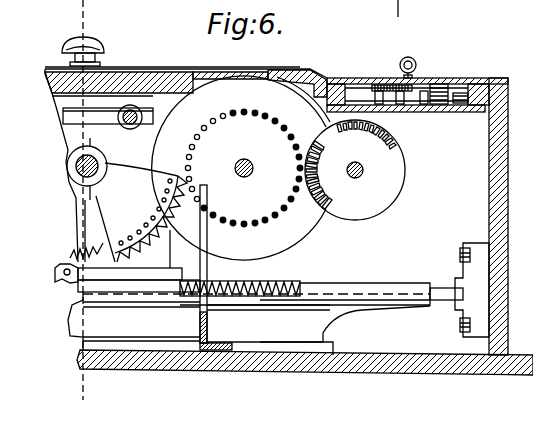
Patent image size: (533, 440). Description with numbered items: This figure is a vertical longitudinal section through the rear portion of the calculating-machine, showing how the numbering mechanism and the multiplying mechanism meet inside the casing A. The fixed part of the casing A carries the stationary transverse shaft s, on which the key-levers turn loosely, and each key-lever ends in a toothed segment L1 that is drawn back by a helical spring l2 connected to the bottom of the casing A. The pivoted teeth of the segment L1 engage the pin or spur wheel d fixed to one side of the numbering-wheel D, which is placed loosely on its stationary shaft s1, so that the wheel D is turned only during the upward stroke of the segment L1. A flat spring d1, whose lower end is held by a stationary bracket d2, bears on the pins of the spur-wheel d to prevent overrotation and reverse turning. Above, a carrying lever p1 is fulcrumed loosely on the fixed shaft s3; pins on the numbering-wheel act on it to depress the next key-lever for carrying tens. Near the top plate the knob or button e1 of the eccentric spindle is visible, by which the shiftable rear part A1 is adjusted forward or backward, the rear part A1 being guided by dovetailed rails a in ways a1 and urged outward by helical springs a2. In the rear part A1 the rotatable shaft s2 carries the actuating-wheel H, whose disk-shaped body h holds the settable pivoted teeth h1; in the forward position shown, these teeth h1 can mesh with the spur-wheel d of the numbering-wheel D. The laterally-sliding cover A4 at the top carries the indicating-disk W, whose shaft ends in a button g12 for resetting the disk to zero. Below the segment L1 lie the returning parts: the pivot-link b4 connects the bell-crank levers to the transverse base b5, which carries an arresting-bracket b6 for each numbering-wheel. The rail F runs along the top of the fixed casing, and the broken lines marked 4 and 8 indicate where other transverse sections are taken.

The casing A is at (247, 382).
The top rail F is at (172, 55).
The shiftable rear part of the casing A1 is at (480, 216).
The laterally-sliding cover A4 is at (388, 79).
The indicating-disk W is at (433, 88).
The button g12 is at (418, 57).
The section line 8 8 is at (392, 23).
The section line 4 4 is at (79, 216).
The knob or button e1 is at (83, 42).
The lever p1 is at (70, 115).
The fixed shaft s3 is at (135, 124).
The fixed transverse shaft s is at (95, 160).
The toothed segment L1 is at (136, 212).
The helical spring l2 is at (70, 255).
The pivot-link b4 is at (62, 286).
The transverse base b5 is at (254, 281).
The arresting-bracket b6 is at (164, 253).
The numbering-wheel D is at (241, 168).
The pin or spur wheel d is at (183, 140).
The shaft s1 is at (253, 168).
The actuating-wheel H is at (355, 179).
The shaft s2 is at (363, 172).
The teeth h1 is at (421, 146).
The disk-shaped body h is at (400, 176).
The flat spring d1 is at (213, 264).
The stationary bracket d2 is at (218, 331).
The helical spring a2 is at (240, 279).
The way a1 is at (351, 297).
The dovetailed rail a is at (459, 290).